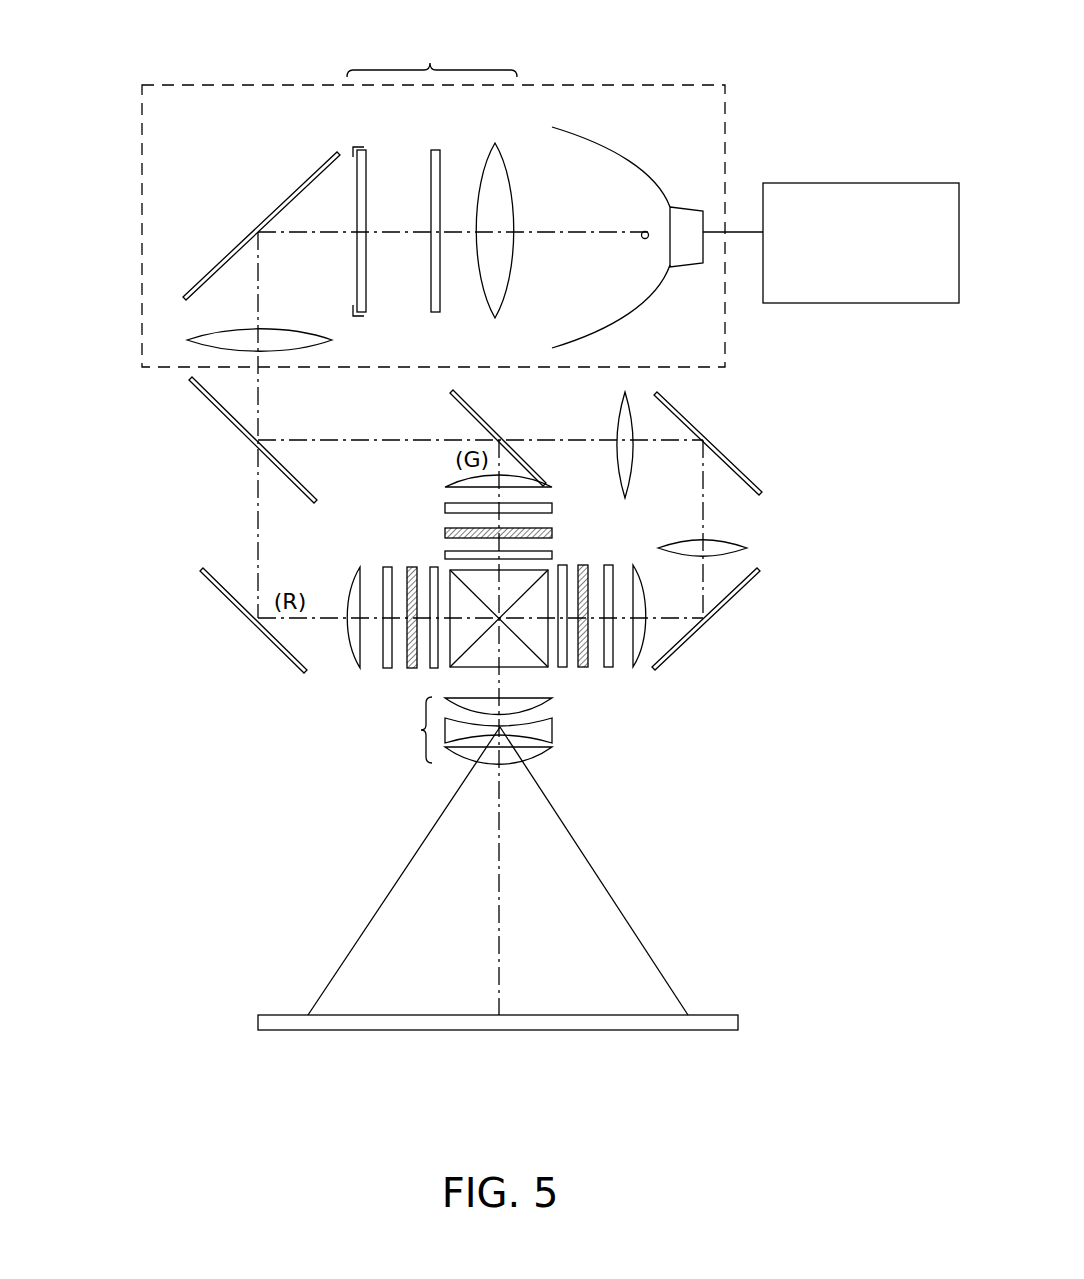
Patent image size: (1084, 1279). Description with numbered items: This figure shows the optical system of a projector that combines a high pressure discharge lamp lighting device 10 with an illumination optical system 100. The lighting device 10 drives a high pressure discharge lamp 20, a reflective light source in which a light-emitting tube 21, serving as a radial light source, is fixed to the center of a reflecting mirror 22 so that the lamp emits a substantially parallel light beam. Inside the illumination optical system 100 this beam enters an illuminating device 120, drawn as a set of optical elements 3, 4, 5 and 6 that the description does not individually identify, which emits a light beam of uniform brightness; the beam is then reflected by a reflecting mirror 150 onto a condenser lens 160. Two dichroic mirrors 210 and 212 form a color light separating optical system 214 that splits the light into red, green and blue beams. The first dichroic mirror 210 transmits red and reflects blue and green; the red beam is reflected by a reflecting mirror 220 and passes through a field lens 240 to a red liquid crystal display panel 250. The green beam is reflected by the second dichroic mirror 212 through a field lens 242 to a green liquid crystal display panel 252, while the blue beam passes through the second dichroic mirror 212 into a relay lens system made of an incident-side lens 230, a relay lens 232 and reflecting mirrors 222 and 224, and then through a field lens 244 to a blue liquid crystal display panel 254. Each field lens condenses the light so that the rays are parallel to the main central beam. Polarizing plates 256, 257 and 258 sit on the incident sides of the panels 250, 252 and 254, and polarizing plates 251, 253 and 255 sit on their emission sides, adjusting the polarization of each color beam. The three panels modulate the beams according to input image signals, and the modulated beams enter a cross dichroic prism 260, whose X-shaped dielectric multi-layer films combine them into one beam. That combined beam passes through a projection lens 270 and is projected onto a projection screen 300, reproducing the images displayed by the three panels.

The illumination optical system 100 is at (640, 82).
The high pressure discharge lamp lighting device 10 is at (850, 183).
The high pressure discharge lamp 20 is at (657, 218).
The light-emitting tube 21 is at (642, 239).
The reflecting mirror 22 is at (580, 148).
The illuminating device 120 is at (432, 174).
The collimating lens 3 is at (496, 150).
The first lens array 4 is at (435, 150).
The second lens array 5 is at (366, 160).
The polarization conversion element 6 is at (355, 147).
The reflecting mirror 150 is at (296, 185).
The condenser lens 160 is at (290, 328).
The first dichroic mirror 210 is at (209, 401).
The second dichroic mirror 212 is at (476, 414).
The color light separating optical system 214 is at (257, 505).
The reflecting mirror 220 is at (216, 583).
The reflecting mirror 222 is at (740, 463).
The reflecting mirror 224 is at (740, 587).
The incident-side lens 230 is at (618, 424).
The relay lens 232 is at (739, 544).
The field lens 240 is at (350, 593).
The field lens 242 is at (445, 487).
The field lens 244 is at (638, 670).
The red liquid crystal display panel 250 is at (413, 565).
The polarizing plate 251 is at (433, 672).
The green liquid crystal display panel 252 is at (553, 533).
The polarizing plate 253 is at (553, 554).
The blue liquid crystal display panel 254 is at (585, 565).
The polarizing plate 255 is at (563, 670).
The polarizing plate 256 is at (384, 565).
The polarizing plate 257 is at (445, 507).
The polarizing plate 258 is at (610, 670).
The cross dichroic prism 260 is at (528, 670).
The projection lens 270 is at (460, 730).
The projection screen 300 is at (280, 1015).